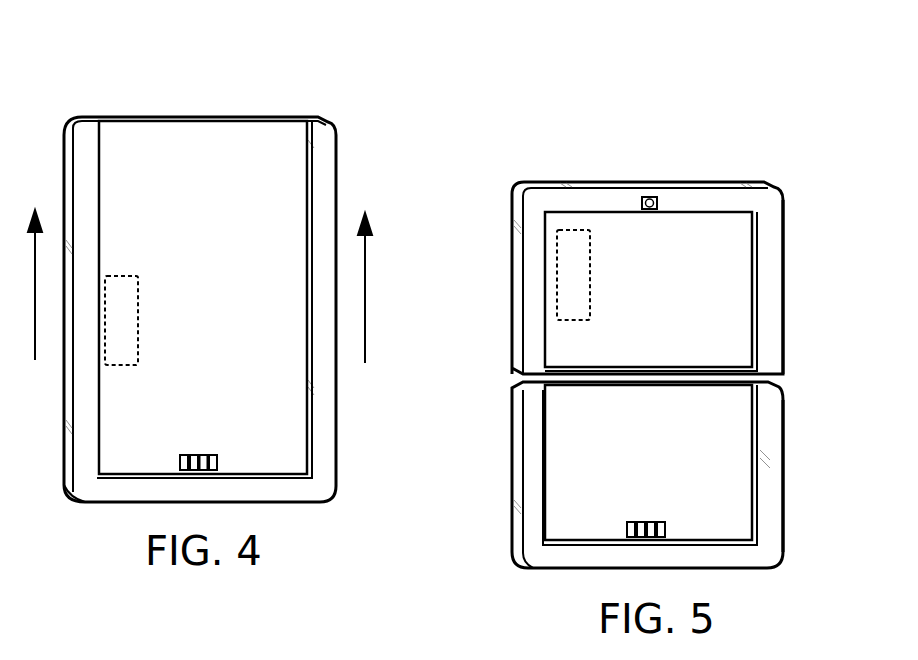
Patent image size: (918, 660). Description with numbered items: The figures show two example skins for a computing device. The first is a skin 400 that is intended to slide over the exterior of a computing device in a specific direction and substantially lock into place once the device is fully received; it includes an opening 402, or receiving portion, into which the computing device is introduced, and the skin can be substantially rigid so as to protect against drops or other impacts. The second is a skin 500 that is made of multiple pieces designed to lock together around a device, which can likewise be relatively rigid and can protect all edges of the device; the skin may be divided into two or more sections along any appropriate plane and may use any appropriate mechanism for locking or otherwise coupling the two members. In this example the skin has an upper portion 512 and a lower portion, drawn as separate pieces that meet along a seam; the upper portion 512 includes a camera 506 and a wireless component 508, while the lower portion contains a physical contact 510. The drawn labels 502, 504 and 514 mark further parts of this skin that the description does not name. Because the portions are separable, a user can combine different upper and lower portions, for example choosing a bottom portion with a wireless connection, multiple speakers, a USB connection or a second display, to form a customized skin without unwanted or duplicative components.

In FIG. 4, the skin 400 is at (214, 265).
In FIG. 4, the opening 402 is at (201, 108).
In FIG. 5, the skin 500 is at (638, 325).
In FIG. 5, the first housing portion 502 is at (675, 242).
In FIG. 5, the second housing portion 504 is at (638, 475).
In FIG. 5, the camera 506 is at (649, 195).
In FIG. 5, the wireless component 508 is at (591, 288).
In FIG. 5, the physical contact 510 is at (647, 517).
In FIG. 5, the upper portion 512 is at (783, 317).
In FIG. 5, the second housing side wall 514 is at (783, 435).